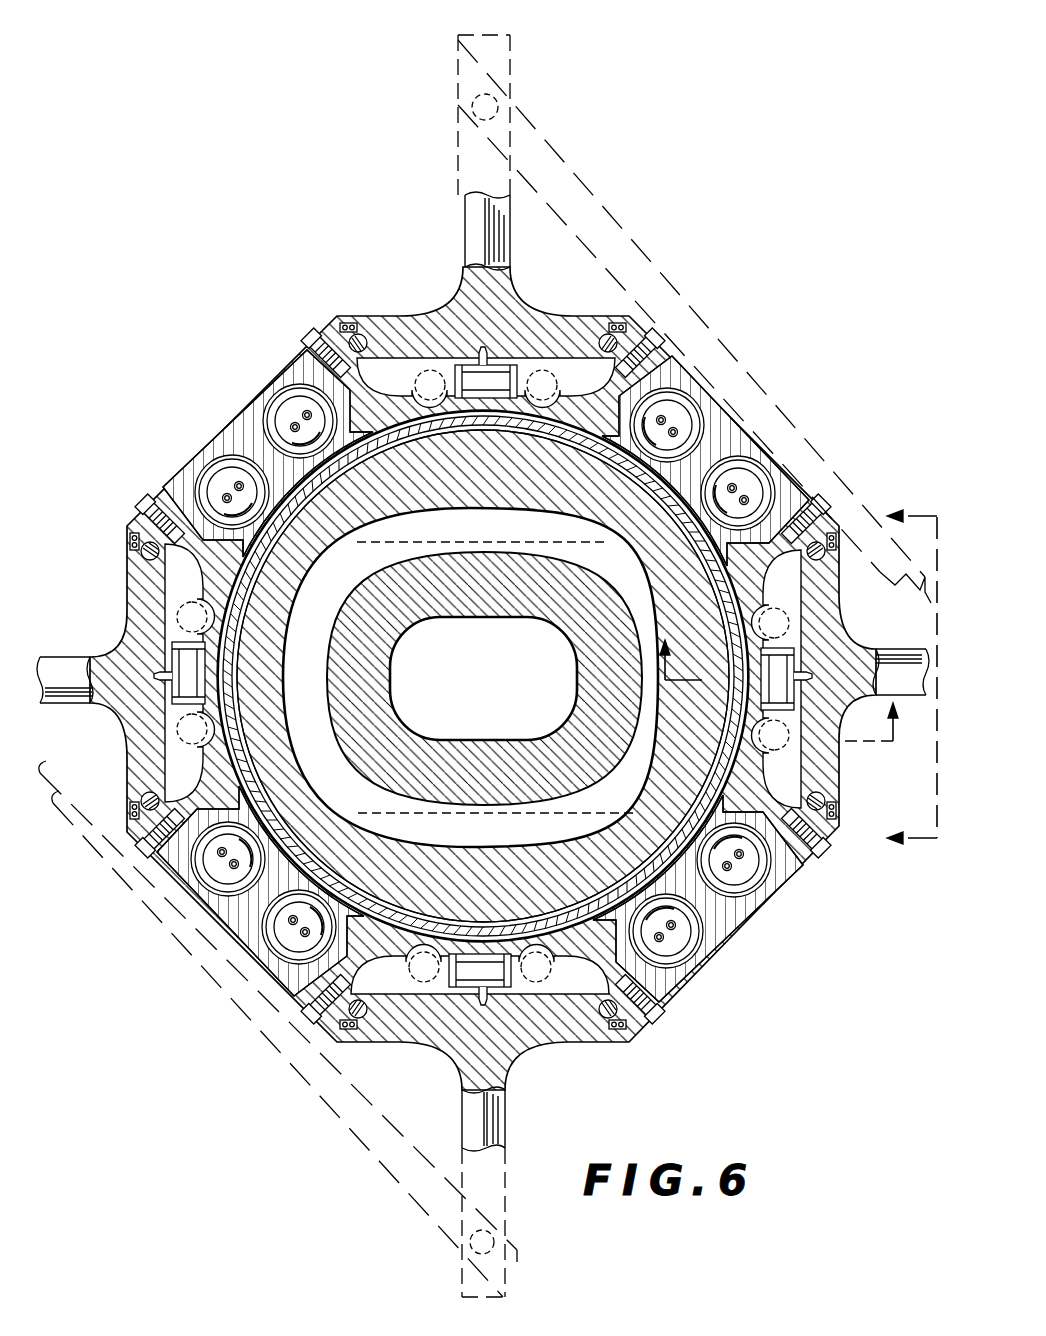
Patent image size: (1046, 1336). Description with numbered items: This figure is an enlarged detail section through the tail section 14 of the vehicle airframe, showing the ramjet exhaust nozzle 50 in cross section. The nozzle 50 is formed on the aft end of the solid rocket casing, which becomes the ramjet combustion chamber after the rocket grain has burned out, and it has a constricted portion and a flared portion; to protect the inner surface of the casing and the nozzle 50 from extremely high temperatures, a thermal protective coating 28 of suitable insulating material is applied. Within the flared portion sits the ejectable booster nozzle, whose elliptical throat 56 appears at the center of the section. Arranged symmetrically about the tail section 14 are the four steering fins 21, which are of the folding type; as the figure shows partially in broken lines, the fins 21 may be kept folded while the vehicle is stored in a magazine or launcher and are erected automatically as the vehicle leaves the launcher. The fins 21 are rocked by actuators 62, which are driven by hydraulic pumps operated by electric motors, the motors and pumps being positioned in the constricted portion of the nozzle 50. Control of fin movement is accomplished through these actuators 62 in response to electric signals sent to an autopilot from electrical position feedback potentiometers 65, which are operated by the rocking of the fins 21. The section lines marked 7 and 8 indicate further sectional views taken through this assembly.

The tail section 14 is at (297, 353).
The steering fins 21 is at (624, 236).
The thermal protective coating 28 is at (410, 437).
The ramjet exhaust nozzle 50 is at (664, 470).
The elliptical throat 56 is at (606, 547).
The actuators 62 is at (418, 382).
The electrical position feedback potentiometers 65 is at (508, 372).
The section line 7- 7 is at (912, 669).
The section line 8- 8 is at (787, 682).